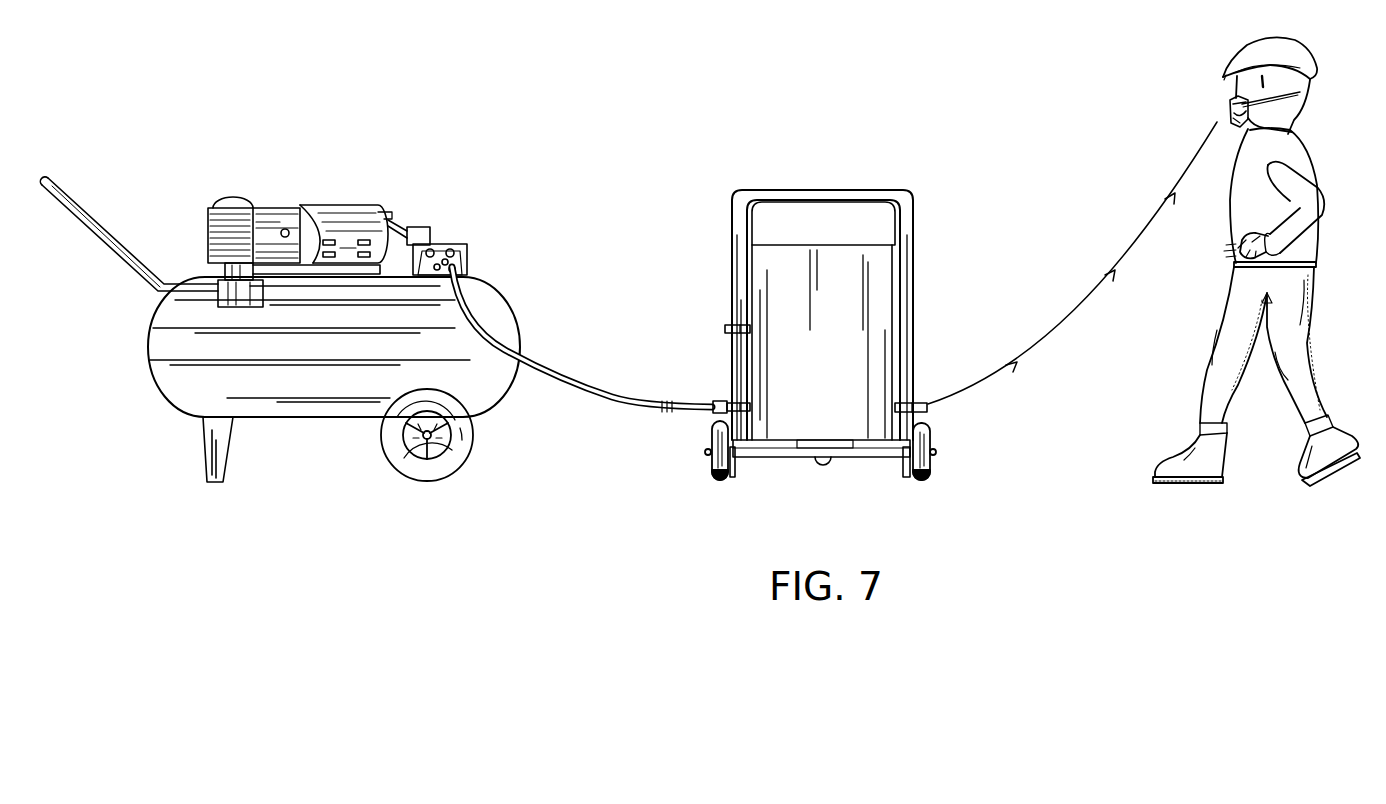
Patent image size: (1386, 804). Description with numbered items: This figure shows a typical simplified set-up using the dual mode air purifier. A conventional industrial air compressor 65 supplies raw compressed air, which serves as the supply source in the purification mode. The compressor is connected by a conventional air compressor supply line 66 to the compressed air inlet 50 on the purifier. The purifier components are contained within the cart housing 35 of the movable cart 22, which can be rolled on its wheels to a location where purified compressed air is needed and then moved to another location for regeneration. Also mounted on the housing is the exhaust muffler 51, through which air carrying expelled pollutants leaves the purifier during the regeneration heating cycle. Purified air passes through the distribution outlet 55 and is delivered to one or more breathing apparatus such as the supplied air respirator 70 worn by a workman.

The movable cart 22 is at (979, 241).
The cart housing 35 is at (825, 360).
The compressed air inlet 50 is at (724, 400).
The exhaust muffler 51 is at (725, 329).
The distribution outlet 55 is at (926, 403).
The industrial air compressor 65 is at (74, 373).
The air compressor supply line 66 is at (641, 409).
The supplied air respirator 70 is at (1231, 105).